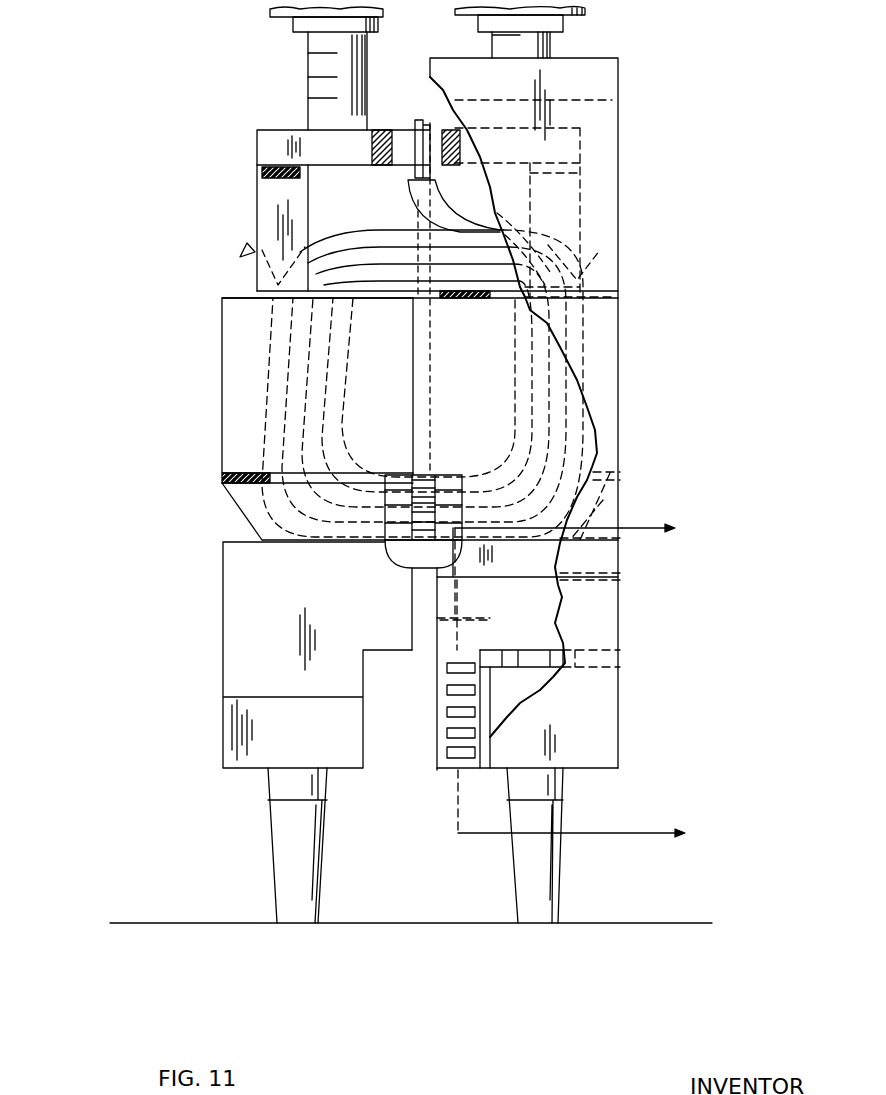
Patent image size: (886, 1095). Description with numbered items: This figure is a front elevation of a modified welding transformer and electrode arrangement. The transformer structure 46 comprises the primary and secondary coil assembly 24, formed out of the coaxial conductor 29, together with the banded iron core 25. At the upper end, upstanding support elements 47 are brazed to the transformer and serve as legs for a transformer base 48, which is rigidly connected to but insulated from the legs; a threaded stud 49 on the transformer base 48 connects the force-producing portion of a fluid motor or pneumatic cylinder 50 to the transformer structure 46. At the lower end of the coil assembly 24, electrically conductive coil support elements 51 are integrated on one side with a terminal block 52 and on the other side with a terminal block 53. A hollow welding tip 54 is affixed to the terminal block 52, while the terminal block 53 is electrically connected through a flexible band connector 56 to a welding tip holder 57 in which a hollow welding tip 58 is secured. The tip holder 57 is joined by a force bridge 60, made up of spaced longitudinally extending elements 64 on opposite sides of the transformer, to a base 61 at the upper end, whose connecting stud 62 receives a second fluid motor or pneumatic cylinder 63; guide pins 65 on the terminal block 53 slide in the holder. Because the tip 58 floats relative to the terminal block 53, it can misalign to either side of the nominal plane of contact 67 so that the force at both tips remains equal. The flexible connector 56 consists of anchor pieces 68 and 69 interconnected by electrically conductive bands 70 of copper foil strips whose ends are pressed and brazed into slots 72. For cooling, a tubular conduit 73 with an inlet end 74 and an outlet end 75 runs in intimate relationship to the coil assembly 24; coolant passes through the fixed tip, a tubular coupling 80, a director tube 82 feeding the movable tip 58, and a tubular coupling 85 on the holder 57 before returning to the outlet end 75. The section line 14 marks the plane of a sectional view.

The section line 14- 14 is at (583, 677).
The primary and secondary coil assembly 24 is at (368, 240).
The banded iron core 25 is at (240, 350).
The coaxial conductor 29 is at (455, 220).
The transformer structure 46 is at (222, 415).
The upstanding support elements 47 is at (262, 200).
The transformer base 48 is at (262, 145).
The threaded stud 49 is at (312, 55).
The fluid motor or pneumatic cylinder 50 is at (270, 13).
The coil support elements 51 is at (245, 500).
The terminal block 52 is at (232, 645).
The terminal block 53 is at (610, 556).
The hollow welding tip 54 is at (272, 830).
The flexible band connector 56 is at (445, 758).
The welding tip holder 57 is at (513, 693).
The hollow welding tip 58 is at (545, 875).
The force bridge 60 is at (425, 418).
The base 61 is at (430, 90).
The connecting stud 62 is at (550, 52).
The second fluid motor or pneumatic cylinder 63 is at (585, 13).
The longitudinally extending elements 64 is at (440, 112).
The guide pin 65 is at (498, 657).
The nominal plane of contact 67 is at (147, 922).
The anchor piece 68 is at (450, 640).
The anchor piece 69 is at (445, 672).
The electrically conductive bands 70 is at (458, 754).
The slots 72 is at (452, 708).
The tubular conduit 73 is at (257, 266).
The inlet end 74 is at (247, 243).
The outlet end 75 is at (597, 245).
The tubular coupling 80 is at (403, 560).
The director tube 82 is at (528, 650).
The tubular coupling 85 is at (622, 652).